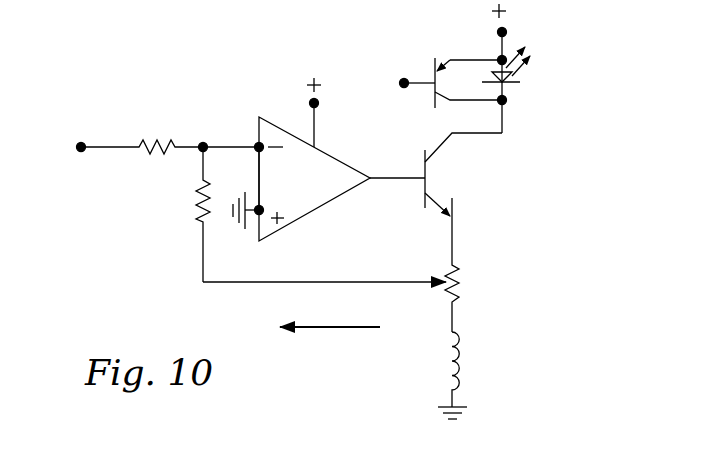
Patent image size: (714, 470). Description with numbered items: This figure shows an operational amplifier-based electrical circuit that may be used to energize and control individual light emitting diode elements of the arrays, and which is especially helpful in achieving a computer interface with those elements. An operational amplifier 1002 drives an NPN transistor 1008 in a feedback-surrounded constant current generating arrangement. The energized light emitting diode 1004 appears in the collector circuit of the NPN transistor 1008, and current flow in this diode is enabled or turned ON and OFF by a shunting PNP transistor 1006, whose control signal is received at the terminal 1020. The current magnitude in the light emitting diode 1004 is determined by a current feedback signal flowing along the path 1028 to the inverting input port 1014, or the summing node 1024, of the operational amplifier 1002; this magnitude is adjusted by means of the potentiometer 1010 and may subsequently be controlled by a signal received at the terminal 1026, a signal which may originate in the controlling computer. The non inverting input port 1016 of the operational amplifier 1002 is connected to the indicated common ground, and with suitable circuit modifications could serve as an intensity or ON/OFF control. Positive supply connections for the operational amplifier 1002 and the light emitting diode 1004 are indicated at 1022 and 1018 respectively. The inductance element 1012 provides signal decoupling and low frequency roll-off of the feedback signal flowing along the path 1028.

The operational amplifier 1002 is at (273, 117).
The light emitting diode 1004 is at (508, 85).
The PNP transistor 1006 is at (441, 68).
The NPN transistor 1008 is at (421, 202).
The potentiometer 1010 is at (462, 272).
The inductance element 1012 is at (461, 353).
The inverting input port 1014 is at (259, 144).
The non inverting input port 1016 is at (259, 213).
The positive supply connection 1018 is at (505, 31).
The terminal 1020 is at (404, 83).
The positive supply connection 1022 is at (313, 101).
The summing node 1024 is at (203, 144).
The terminal 1026 is at (81, 151).
The path 1028 is at (320, 327).